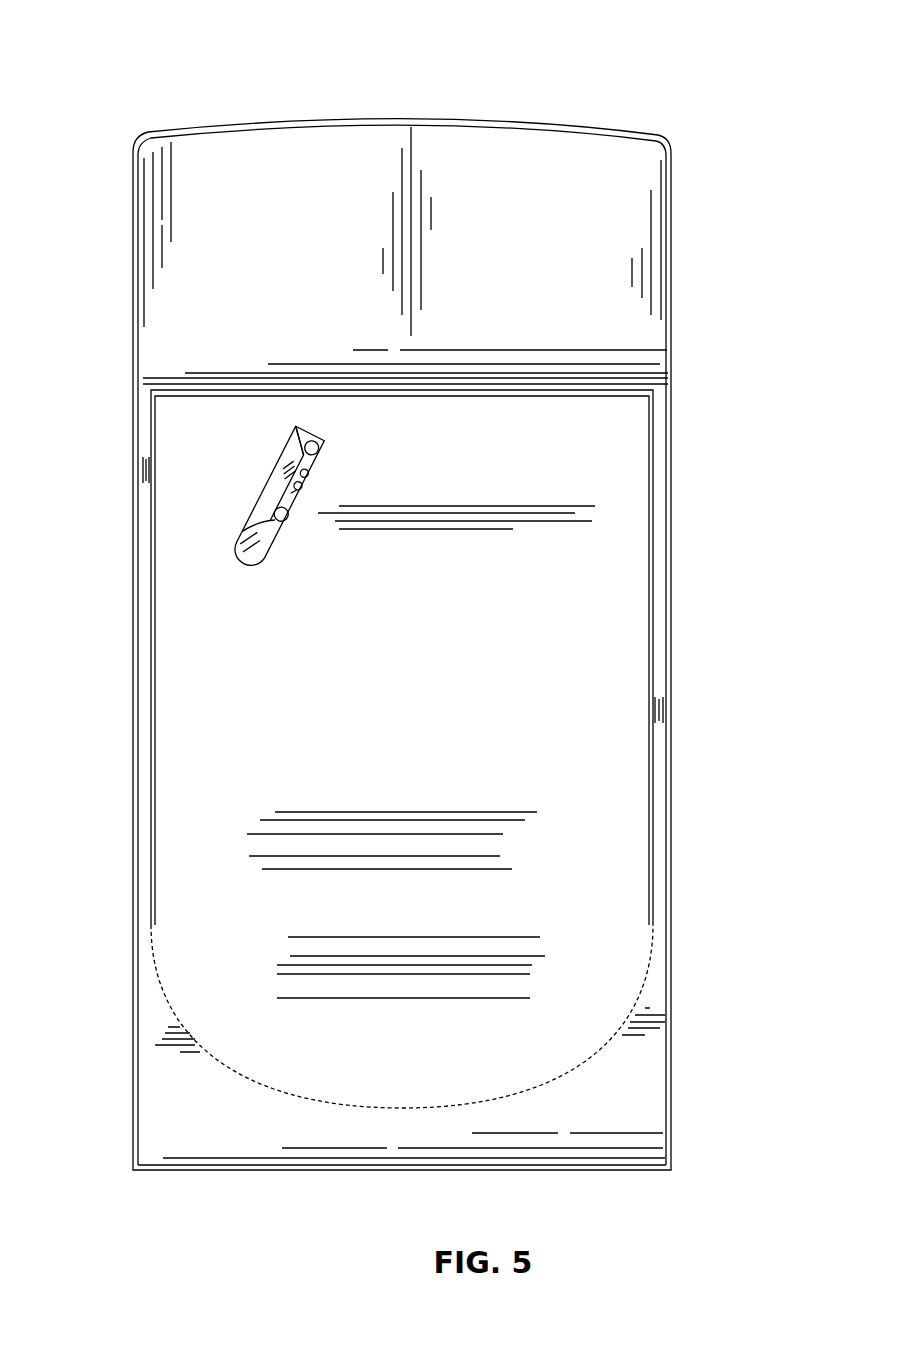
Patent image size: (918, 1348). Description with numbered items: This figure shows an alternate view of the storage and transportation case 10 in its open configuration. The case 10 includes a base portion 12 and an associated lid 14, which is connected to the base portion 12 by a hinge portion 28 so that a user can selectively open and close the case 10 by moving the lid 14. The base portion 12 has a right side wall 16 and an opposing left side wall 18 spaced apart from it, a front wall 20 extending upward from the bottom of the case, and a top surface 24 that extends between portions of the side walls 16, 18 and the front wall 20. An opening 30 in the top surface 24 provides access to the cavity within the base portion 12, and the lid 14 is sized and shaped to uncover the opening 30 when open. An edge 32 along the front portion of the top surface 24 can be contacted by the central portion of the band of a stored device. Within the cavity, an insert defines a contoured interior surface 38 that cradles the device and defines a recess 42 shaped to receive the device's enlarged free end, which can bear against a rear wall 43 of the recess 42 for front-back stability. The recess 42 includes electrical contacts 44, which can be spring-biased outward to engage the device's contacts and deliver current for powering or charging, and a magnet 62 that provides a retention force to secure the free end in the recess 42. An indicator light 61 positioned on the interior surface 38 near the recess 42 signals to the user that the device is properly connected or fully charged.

The storage and transportation case 10 is at (122, 31).
The base portion 12 is at (387, 749).
The lid 14 is at (620, 311).
The right side wall 16 is at (673, 672).
The left side wall 18 is at (130, 720).
The front wall 20 is at (261, 1170).
The top surface 24 is at (170, 1045).
The hinge portion 28 is at (643, 360).
The opening 30 is at (598, 801).
The edge 32 is at (653, 885).
The interior surface 38 is at (412, 690).
The recess 42 is at (308, 505).
The rear wall 43 is at (311, 447).
The electrical contacts 44 is at (300, 482).
The indicator light 61 is at (281, 514).
The magnet 62 is at (300, 440).